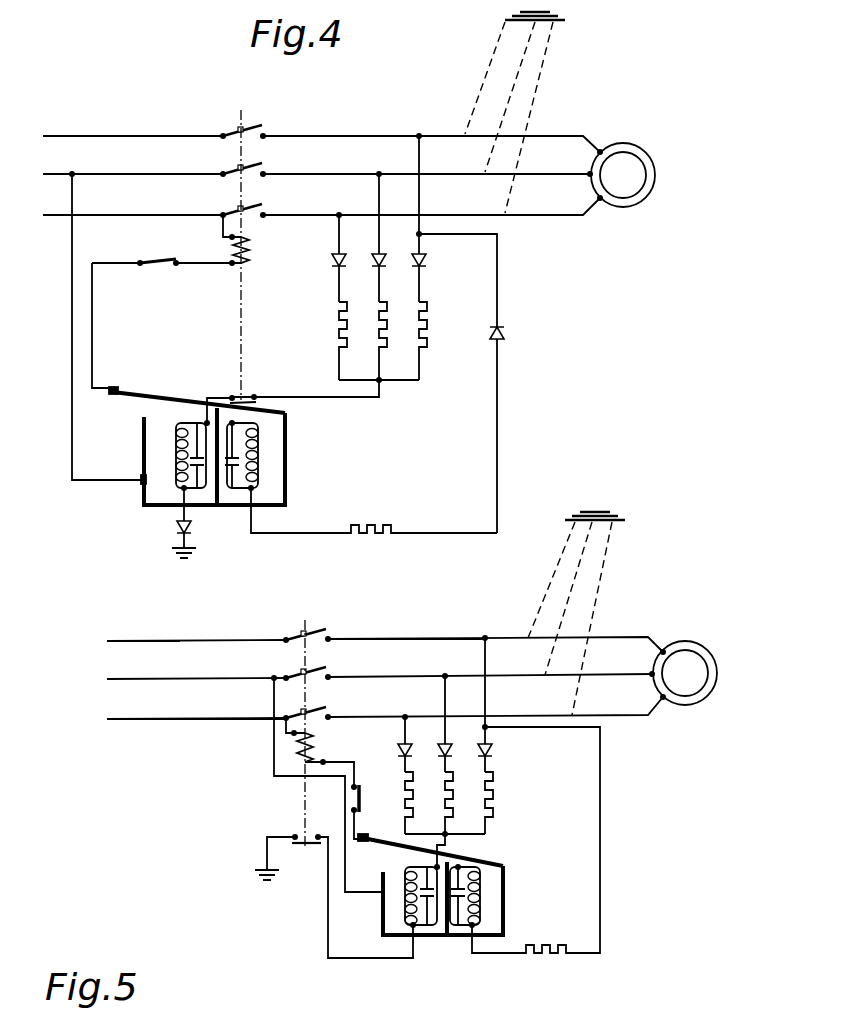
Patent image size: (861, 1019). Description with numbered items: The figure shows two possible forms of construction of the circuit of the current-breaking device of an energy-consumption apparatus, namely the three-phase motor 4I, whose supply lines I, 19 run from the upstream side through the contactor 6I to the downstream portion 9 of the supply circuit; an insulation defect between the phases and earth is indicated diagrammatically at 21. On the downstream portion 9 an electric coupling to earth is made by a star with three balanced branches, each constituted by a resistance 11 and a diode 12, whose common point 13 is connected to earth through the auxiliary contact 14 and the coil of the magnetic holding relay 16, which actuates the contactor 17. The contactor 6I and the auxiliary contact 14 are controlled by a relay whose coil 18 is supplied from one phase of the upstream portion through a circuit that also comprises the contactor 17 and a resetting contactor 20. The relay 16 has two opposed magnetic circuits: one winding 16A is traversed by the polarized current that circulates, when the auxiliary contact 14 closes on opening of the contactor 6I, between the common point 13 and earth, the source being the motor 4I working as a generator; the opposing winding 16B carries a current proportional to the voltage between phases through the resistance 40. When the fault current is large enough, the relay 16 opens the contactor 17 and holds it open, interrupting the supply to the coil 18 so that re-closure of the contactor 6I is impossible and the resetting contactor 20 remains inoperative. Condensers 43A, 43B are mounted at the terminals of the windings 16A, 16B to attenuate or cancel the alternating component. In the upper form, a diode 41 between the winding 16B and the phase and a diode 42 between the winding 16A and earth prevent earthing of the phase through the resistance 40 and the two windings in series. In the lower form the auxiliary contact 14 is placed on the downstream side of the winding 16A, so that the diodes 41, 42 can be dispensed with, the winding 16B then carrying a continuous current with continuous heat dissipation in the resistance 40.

In FIG. 4, the phase line I is at (66, 154).
In FIG. 5, the phase line I is at (128, 658).
In FIG. 4, the supply line 19 is at (139, 154).
In FIG. 5, the supply line 19 is at (165, 705).
In FIG. 4, the downstream portion of the supply circuit 9 is at (332, 151).
In FIG. 5, the downstream portion of the supply circuit 9 is at (449, 644).
In FIG. 4, the contactor 6I is at (250, 127).
In FIG. 5, the contactor 6I is at (326, 629).
In FIG. 4, the motor 4I is at (617, 158).
In FIG. 5, the motor 4I is at (689, 659).
In FIG. 4, the insulation defect 21 is at (480, 84).
In FIG. 5, the insulation defect 21 is at (554, 583).
In FIG. 4, the diode 12 is at (340, 265).
In FIG. 5, the diode 12 is at (492, 752).
In FIG. 4, the resistance 11 is at (420, 326).
In FIG. 5, the resistance 11 is at (492, 804).
In FIG. 4, the common point 13 is at (382, 382).
In FIG. 5, the common point 13 is at (450, 836).
In FIG. 4, the diode 41 is at (504, 333).
In FIG. 4, the resistance 40 is at (395, 525).
In FIG. 5, the resistance 40 is at (544, 953).
In FIG. 4, the resetting contactor 20 is at (163, 260).
In FIG. 5, the resetting contactor 20 is at (362, 790).
In FIG. 4, the coil 18 is at (250, 251).
In FIG. 5, the coil 18 is at (298, 753).
In FIG. 4, the contactor 17 is at (166, 393).
In FIG. 5, the contactor 17 is at (388, 852).
In FIG. 4, the auxiliary contact 14 is at (255, 395).
In FIG. 5, the auxiliary contact 14 is at (304, 848).
In FIG. 4, the coil of magnetic holding relay 16 is at (285, 503).
In FIG. 5, the coil of magnetic holding relay 16 is at (505, 898).
In FIG. 4, the winding 16A is at (176, 485).
In FIG. 5, the winding 16A is at (405, 898).
In FIG. 4, the opposing winding 16B is at (258, 456).
In FIG. 5, the opposing winding 16B is at (482, 880).
In FIG. 4, the condenser 43A is at (205, 460).
In FIG. 5, the condenser 43A is at (430, 905).
In FIG. 4, the condenser 43B is at (240, 465).
In FIG. 5, the condenser 43B is at (460, 905).
In FIG. 4, the diode 42 is at (190, 530).